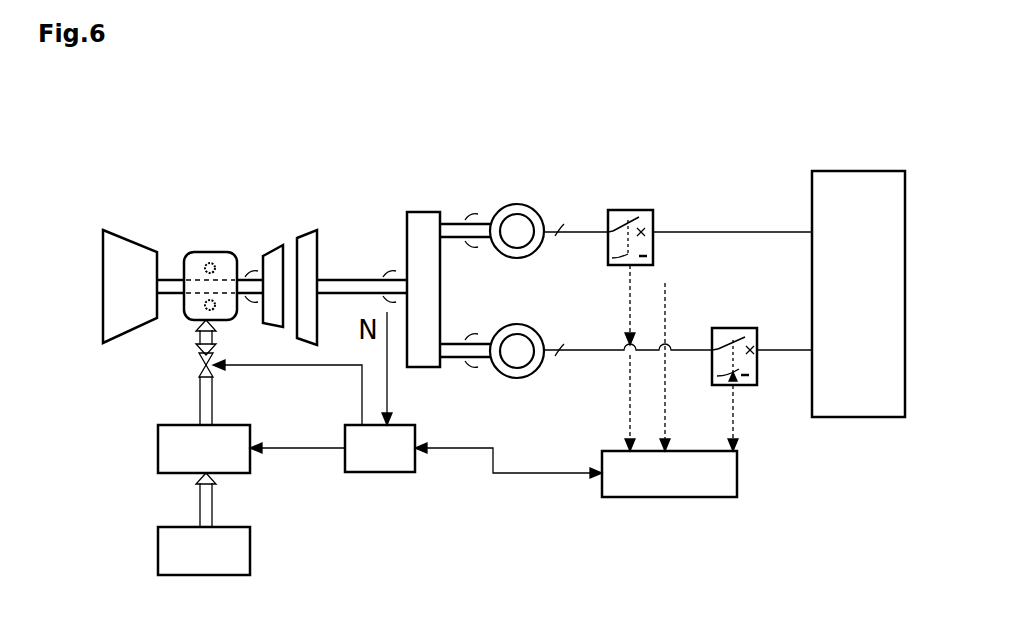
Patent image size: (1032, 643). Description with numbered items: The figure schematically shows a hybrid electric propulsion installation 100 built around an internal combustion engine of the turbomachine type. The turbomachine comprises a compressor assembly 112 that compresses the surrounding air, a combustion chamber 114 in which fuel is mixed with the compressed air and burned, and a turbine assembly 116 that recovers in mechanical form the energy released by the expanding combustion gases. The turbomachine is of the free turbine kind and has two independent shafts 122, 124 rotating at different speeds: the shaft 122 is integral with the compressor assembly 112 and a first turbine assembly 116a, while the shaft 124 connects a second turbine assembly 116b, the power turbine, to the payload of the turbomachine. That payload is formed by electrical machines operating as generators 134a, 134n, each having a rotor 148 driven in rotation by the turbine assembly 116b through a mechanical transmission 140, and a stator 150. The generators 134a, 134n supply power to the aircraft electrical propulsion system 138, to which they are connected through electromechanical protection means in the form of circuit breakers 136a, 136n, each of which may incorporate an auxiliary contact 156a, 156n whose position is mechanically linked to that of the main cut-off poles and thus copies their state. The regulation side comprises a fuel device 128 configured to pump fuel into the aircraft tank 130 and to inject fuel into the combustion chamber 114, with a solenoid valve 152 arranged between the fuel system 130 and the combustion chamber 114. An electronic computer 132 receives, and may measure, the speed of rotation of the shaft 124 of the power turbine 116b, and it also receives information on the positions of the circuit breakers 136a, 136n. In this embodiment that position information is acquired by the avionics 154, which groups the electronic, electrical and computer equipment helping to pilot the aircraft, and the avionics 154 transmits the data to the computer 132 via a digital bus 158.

The installation 100 is at (212, 142).
The compressor assembly 112 is at (122, 250).
The combustion chamber 114 is at (192, 252).
The turbine assembly 116 is at (290, 234).
The first turbine assembly 116a is at (272, 258).
The second turbine assembly 116b is at (310, 238).
The shaft 122 is at (168, 287).
The shaft 124 is at (333, 288).
The fuel device 128 is at (155, 448).
The tank 130 is at (157, 553).
The electronic computer 132 is at (380, 475).
The generator 134a is at (548, 173).
The generator 134n is at (524, 390).
The circuit breaker 136a is at (668, 212).
The circuit breaker 136n is at (731, 315).
The electrical propulsion system 138 is at (858, 171).
The mechanical transmission 140 is at (425, 212).
The rotor 148 is at (535, 207).
The stator 150 is at (512, 198).
The solenoid valve 152 is at (185, 370).
The avionics 154 is at (738, 473).
The auxiliary contact 156a is at (617, 262).
The auxiliary contact 156n is at (752, 387).
The digital bus 158 is at (547, 476).